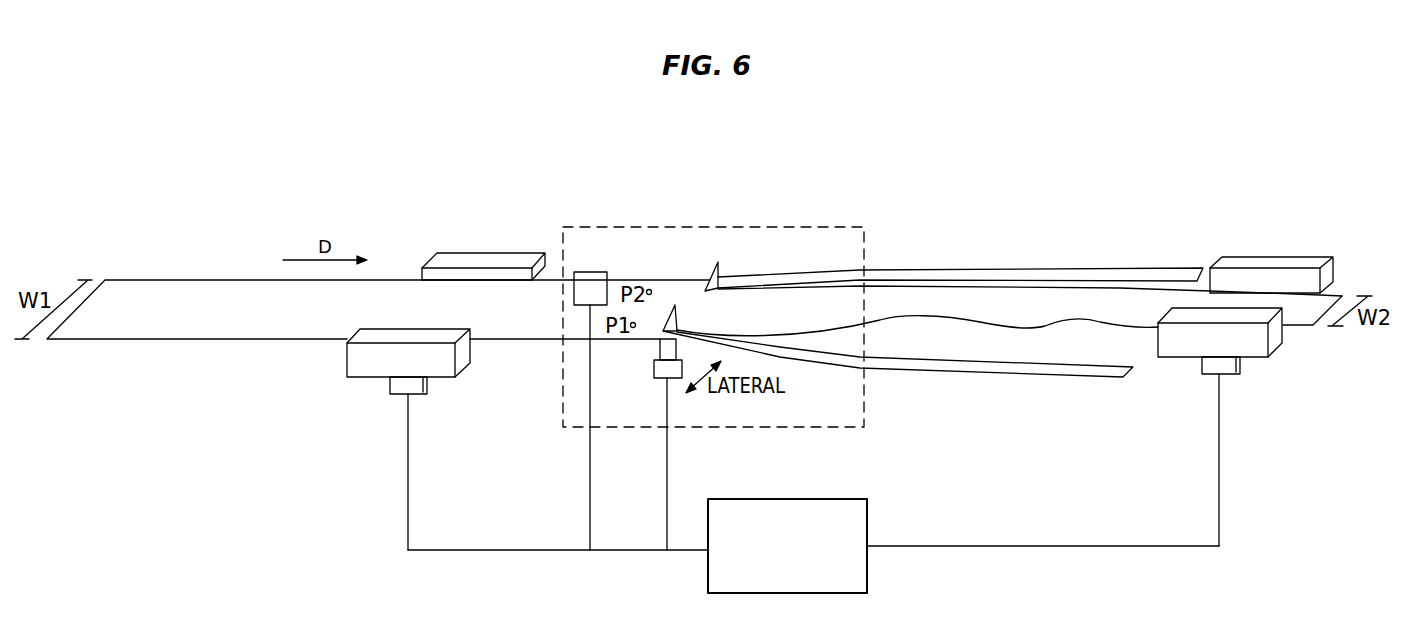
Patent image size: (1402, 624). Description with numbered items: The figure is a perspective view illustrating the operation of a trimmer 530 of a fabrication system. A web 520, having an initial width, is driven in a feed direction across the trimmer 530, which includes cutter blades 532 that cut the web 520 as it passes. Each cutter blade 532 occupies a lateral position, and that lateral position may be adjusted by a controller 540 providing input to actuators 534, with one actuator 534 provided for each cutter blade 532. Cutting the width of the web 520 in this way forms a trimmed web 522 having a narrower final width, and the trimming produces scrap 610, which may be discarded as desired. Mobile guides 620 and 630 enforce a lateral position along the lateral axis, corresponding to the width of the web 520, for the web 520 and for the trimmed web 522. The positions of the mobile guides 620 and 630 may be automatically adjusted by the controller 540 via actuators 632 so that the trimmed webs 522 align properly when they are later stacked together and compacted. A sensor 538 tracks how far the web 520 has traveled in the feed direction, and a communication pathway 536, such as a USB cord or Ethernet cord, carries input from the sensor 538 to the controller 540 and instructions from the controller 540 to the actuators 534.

The web 520 is at (175, 280).
The trimmed web 522 is at (1153, 283).
The trimmer 530 is at (786, 227).
The cutter blade 532 is at (722, 268).
The actuator 534 is at (654, 369).
The communication pathway 536 is at (590, 466).
The sensor 538 is at (593, 272).
The controller 540 is at (806, 573).
The scrap 610 is at (1045, 269).
The mobile guide 620 is at (470, 253).
The mobile guide 630 is at (1300, 257).
The actuator 632 is at (398, 396).